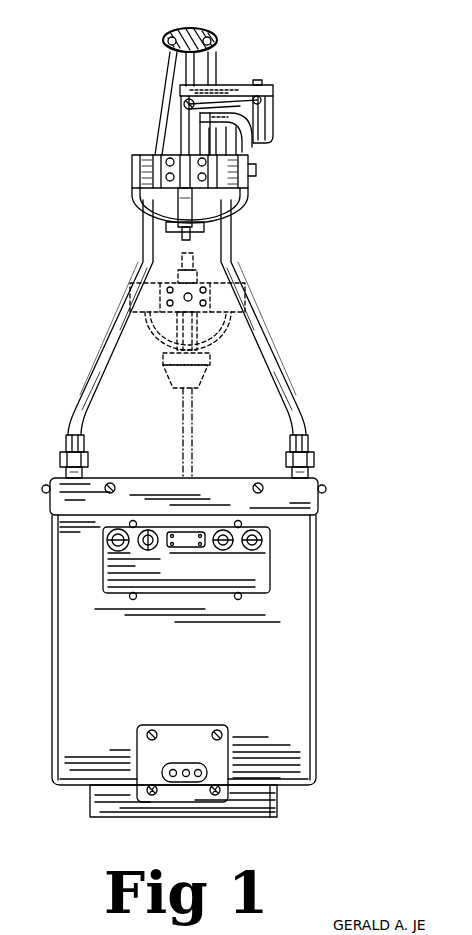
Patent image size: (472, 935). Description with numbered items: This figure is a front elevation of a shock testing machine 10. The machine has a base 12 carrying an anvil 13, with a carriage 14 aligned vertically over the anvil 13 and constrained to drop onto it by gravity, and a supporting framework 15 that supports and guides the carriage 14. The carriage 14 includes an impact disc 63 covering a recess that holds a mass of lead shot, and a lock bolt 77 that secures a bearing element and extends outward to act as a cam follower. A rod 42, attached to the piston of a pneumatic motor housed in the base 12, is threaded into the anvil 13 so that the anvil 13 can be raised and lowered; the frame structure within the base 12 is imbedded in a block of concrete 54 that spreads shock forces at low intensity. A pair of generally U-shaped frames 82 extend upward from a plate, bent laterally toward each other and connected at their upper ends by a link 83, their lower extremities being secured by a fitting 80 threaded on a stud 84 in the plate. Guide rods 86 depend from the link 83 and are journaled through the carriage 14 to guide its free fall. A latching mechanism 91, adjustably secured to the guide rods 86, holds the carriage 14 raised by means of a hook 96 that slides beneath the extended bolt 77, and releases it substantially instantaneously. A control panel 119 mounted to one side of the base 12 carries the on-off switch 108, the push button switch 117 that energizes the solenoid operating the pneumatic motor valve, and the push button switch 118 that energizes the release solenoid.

The shock testing machine 10 is at (312, 376).
The base 12 is at (318, 651).
The anvil 13 is at (209, 366).
The carriage 14 is at (253, 177).
The supporting framework 15 is at (102, 349).
The rod 42 is at (193, 414).
The block of concrete 54 is at (297, 573).
The impact disc 63 is at (163, 353).
The lock bolt 77 is at (181, 172).
The fitting 80 is at (66, 446).
The U-shaped frames 82 is at (230, 242).
The link 83 is at (199, 27).
The stud 84 is at (85, 477).
The guide rods 86 is at (197, 63).
The latching mechanism 91 is at (236, 80).
The hook 96 is at (204, 184).
The on-off switch 108 is at (108, 539).
The push button switch 117 is at (150, 547).
The push button switch 118 is at (215, 547).
The control panel 119 is at (104, 577).